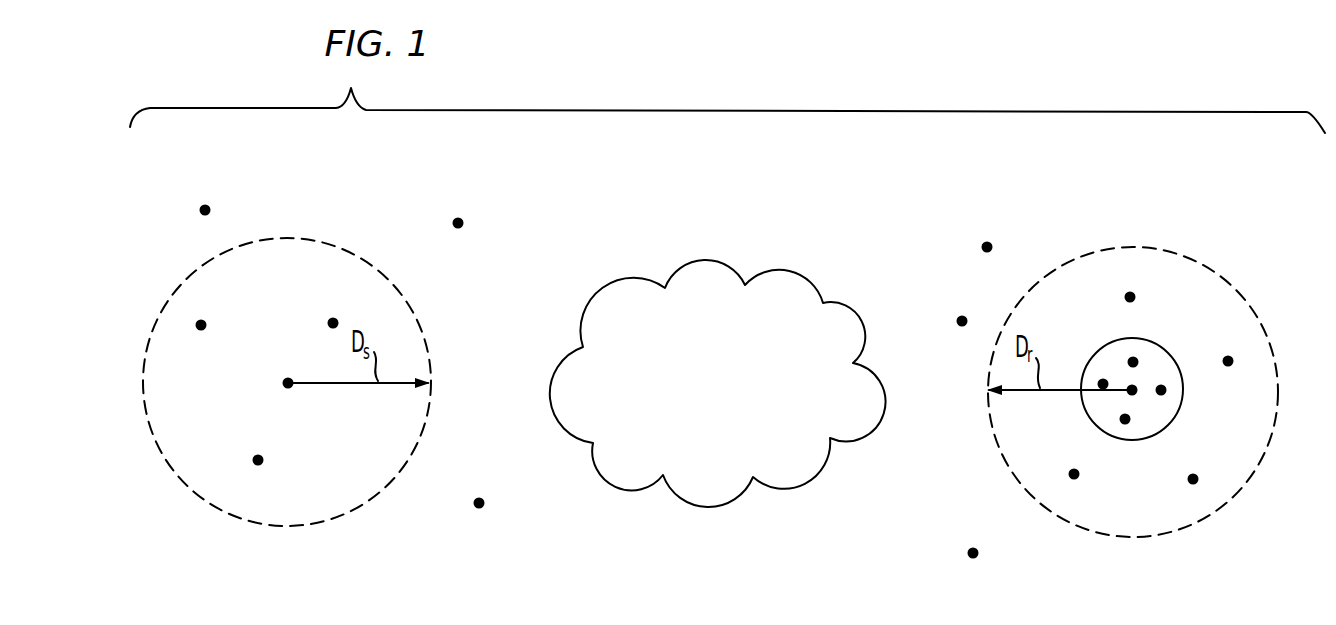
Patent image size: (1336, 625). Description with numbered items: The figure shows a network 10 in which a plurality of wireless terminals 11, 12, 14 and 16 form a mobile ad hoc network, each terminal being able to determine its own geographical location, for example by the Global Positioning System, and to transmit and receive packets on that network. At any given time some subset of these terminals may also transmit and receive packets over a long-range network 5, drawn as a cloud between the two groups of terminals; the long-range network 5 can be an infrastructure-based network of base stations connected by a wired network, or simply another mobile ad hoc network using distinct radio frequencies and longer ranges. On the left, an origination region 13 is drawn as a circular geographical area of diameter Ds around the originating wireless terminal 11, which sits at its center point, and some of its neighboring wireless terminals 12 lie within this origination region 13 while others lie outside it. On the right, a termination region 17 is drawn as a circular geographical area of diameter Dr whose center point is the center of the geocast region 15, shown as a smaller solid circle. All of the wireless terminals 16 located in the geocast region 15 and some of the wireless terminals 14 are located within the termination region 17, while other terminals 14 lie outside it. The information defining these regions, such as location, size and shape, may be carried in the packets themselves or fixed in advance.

The long-range network 5 is at (720, 262).
The network 10 is at (565, 156).
The originating wireless terminal 11 is at (282, 382).
The neighboring wireless terminals 12 is at (205, 205).
The origination region 13 is at (322, 238).
The wireless terminals 14 is at (987, 242).
The geocast region 15 is at (1175, 421).
The wireless terminals 16 is at (1100, 380).
The termination region 17 is at (1205, 262).